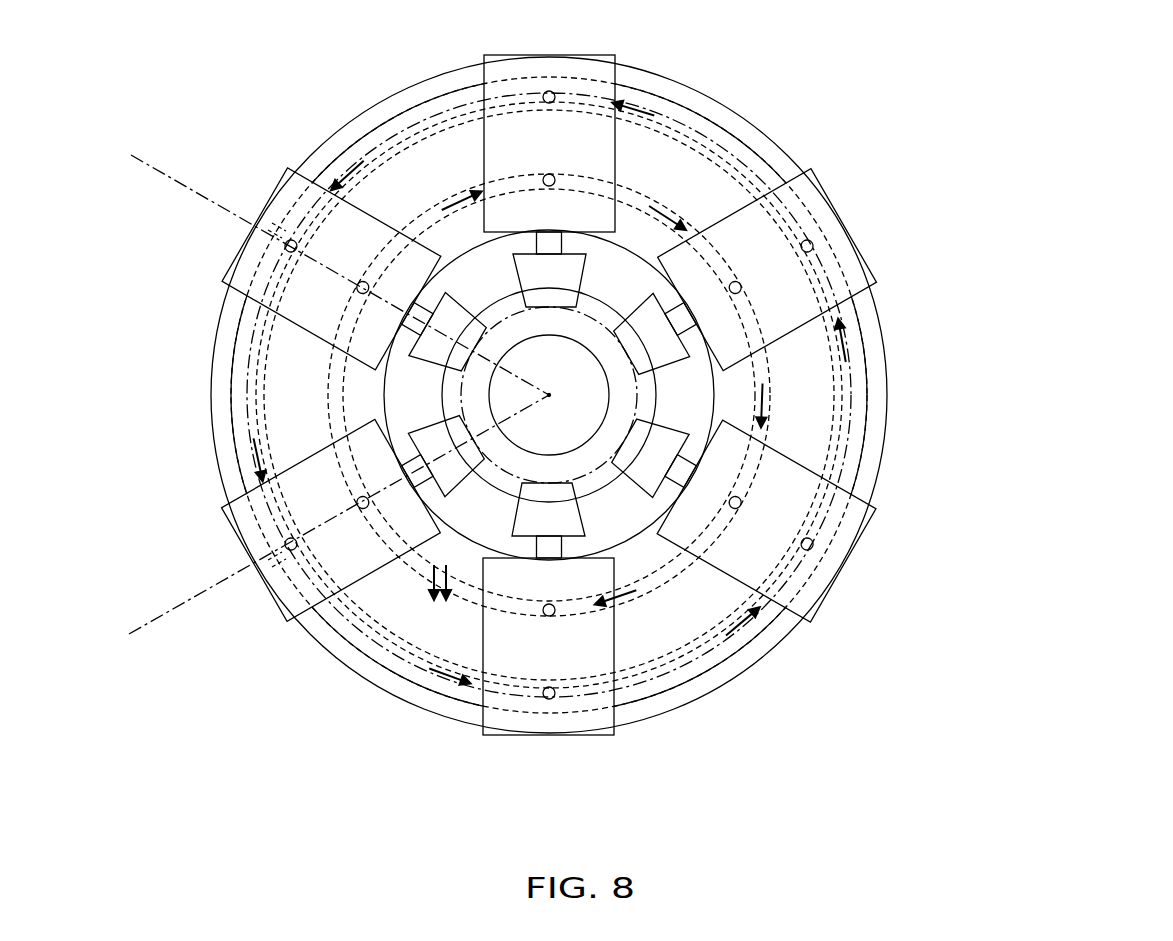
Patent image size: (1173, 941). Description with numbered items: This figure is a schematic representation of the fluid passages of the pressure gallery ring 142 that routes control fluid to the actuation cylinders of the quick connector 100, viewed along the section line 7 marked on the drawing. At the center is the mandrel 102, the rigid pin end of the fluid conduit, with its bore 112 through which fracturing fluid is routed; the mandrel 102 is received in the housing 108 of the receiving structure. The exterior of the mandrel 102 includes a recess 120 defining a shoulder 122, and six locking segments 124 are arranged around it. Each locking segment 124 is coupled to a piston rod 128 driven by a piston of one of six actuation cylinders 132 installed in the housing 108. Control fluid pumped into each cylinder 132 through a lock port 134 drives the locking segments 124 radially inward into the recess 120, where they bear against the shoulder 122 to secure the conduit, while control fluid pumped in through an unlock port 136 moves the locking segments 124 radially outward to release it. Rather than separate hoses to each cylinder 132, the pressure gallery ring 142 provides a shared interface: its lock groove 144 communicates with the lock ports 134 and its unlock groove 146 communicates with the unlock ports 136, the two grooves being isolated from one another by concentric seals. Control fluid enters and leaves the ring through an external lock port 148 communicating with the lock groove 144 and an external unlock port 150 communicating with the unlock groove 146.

The section line 7- 7 is at (92, 567).
The quick connector 100 is at (868, 66).
The mandrel 102 is at (453, 412).
The housing 108 is at (778, 162).
The bore 112 is at (550, 451).
The recess 120 is at (580, 333).
The shoulder 122 is at (573, 345).
The locking segments 124 is at (453, 316).
The piston rods 128 is at (553, 242).
The actuation cylinders 132 is at (512, 58).
The lock port 134 is at (520, 87).
The unlock port 136 is at (551, 173).
The pressure gallery ring 142 is at (733, 106).
The lock groove 144 is at (245, 387).
The unlock groove 146 is at (335, 416).
The external lock port 148 is at (262, 226).
The external unlock port 150 is at (250, 562).